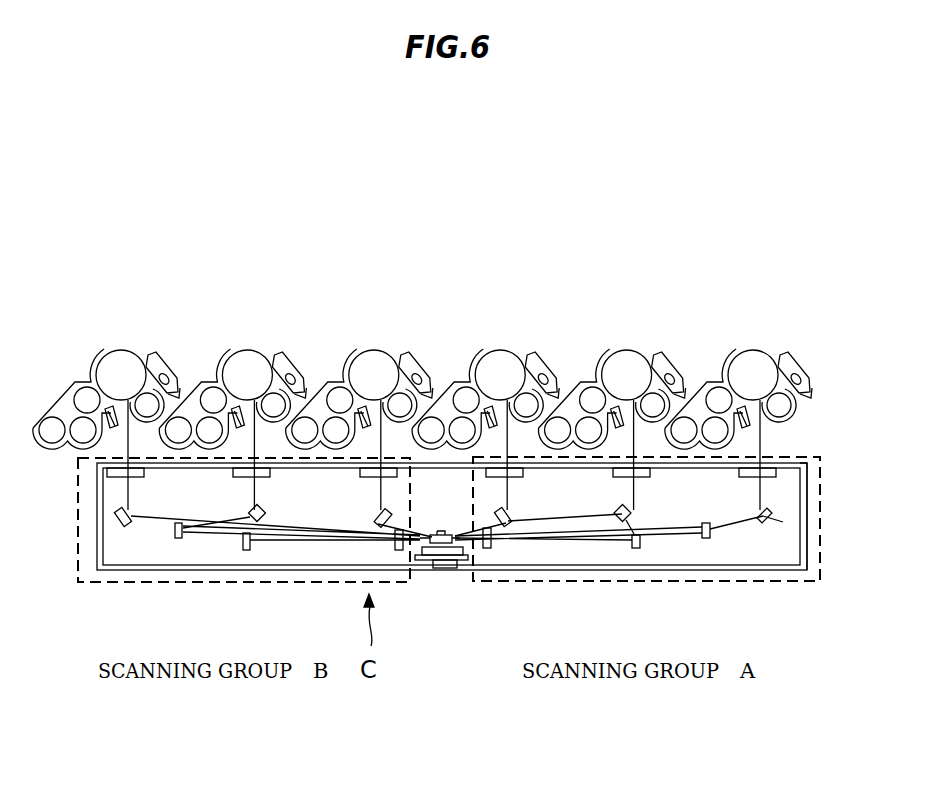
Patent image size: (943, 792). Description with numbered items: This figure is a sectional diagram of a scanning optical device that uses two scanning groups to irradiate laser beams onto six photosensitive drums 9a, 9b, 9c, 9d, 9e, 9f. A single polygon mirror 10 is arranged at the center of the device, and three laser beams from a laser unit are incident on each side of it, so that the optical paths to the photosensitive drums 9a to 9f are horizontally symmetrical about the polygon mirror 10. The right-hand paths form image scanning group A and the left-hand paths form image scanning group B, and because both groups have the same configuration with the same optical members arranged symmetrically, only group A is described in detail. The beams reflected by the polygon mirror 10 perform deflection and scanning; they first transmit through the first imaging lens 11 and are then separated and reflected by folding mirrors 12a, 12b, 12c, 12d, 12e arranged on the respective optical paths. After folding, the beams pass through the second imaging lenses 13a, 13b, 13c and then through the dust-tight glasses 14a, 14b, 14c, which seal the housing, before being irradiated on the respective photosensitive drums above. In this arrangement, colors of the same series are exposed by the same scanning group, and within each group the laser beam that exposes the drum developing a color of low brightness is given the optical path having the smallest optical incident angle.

The photosensitive drum 9a is at (128, 366).
The photosensitive drum 9b is at (254, 366).
The photosensitive drum 9c is at (381, 366).
The photosensitive drum 9d is at (507, 366).
The photosensitive drum 9e is at (634, 366).
The photosensitive drum 9f is at (760, 366).
The polygon mirror 10 is at (456, 569).
The first imaging lens 11 is at (487, 550).
The folding mirror 12a is at (706, 540).
The folding mirror 12b is at (509, 524).
The folding mirror 12c is at (767, 522).
The folding mirror 12d is at (636, 549).
The folding mirror 12e is at (783, 523).
The second imaging lens 13a is at (509, 515).
The second imaging lens 13b is at (631, 511).
The second imaging lens 13c is at (788, 465).
The dust-tight glass 14a is at (497, 466).
The dust-tight glass 14b is at (627, 468).
The dust-tight glass 14c is at (753, 468).